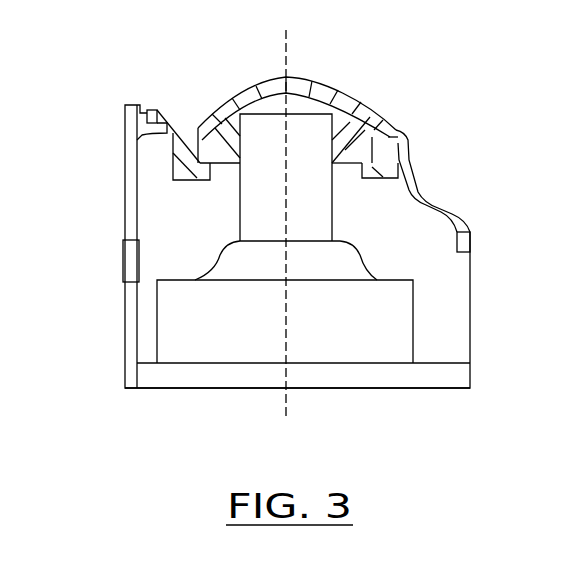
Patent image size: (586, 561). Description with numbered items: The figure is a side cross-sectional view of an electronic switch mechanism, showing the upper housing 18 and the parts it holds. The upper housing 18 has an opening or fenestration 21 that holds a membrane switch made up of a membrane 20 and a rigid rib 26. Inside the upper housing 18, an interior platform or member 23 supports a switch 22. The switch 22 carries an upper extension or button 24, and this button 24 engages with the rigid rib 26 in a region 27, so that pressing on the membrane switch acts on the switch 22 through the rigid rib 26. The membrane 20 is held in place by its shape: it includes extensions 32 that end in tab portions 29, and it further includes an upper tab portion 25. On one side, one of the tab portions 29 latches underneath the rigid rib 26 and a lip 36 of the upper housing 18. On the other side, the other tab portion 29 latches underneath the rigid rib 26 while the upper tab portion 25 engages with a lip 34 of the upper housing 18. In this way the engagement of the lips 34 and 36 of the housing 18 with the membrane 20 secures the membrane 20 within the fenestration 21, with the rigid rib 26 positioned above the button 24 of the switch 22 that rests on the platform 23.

The upper housing 18 is at (125, 352).
The membrane 20 is at (323, 82).
The fenestration 21 is at (167, 150).
The switch 22 is at (362, 340).
The interior platform 23 is at (433, 375).
The button 24 is at (470, 236).
The upper tab portion 25 is at (172, 120).
The rigid rib 26 is at (358, 145).
The region 27 is at (257, 84).
The tab portions 29 is at (183, 170).
The extensions 32 is at (173, 158).
The lip 34 is at (153, 108).
The lip 36 is at (405, 153).